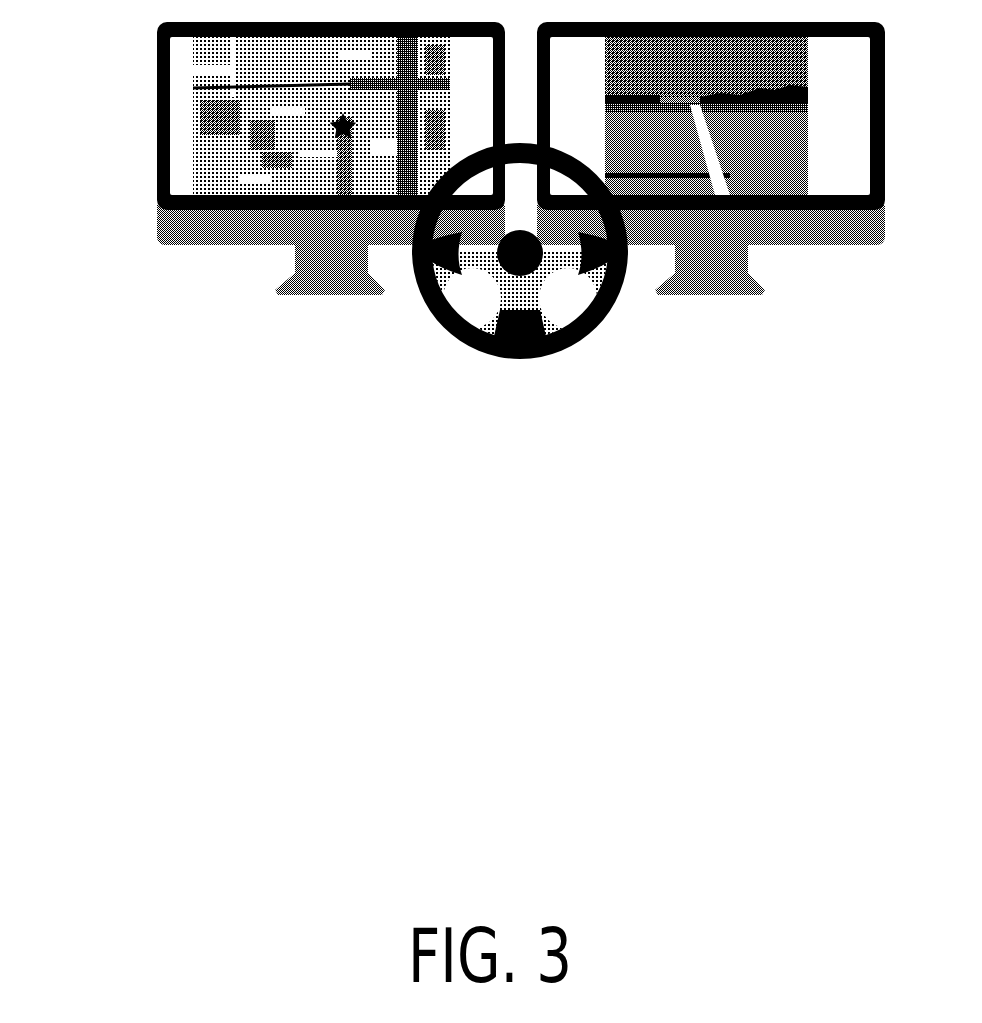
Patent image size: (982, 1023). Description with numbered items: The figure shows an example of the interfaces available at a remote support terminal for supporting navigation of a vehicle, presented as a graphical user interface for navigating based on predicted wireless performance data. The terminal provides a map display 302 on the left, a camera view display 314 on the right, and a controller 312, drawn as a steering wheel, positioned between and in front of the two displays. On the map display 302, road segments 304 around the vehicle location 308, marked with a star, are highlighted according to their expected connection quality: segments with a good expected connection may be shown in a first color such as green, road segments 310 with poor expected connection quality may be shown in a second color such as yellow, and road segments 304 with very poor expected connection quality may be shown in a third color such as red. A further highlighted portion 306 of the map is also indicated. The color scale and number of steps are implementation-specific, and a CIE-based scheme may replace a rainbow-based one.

The map display 302 is at (223, 282).
The road segments 304 is at (248, 62).
The route 306 is at (411, 84).
The vehicle location 308 is at (321, 128).
The road segments 310 is at (254, 161).
The controller 312 is at (543, 396).
The camera view display 314 is at (835, 282).